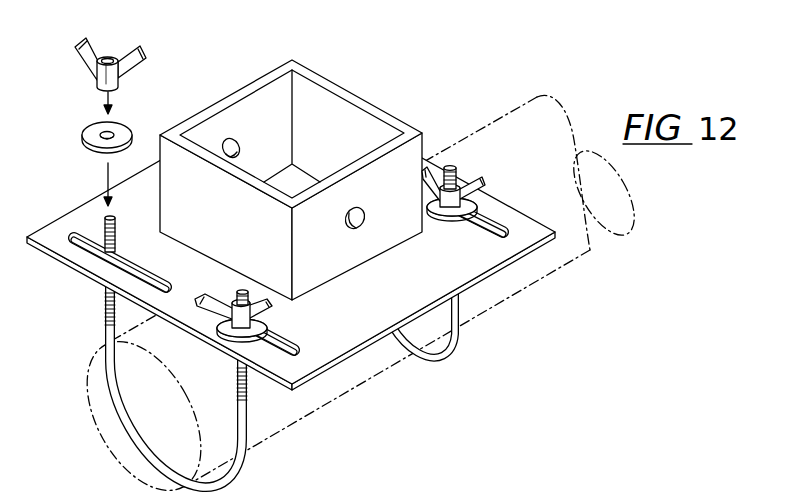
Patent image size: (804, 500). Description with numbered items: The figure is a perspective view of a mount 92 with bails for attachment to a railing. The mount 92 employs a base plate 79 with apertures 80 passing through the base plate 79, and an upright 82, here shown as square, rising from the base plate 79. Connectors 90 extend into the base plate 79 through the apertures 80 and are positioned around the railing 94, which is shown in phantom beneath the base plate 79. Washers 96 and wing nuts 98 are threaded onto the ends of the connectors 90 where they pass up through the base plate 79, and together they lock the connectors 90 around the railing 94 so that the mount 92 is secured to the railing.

The base plate 79 is at (317, 337).
The apertures 80 is at (138, 270).
The upright 82 is at (380, 112).
The connectors 90 is at (245, 428).
The mount 92 is at (462, 258).
The railing 94 is at (598, 262).
The washers 96 is at (120, 127).
The wing nuts 98 is at (131, 51).